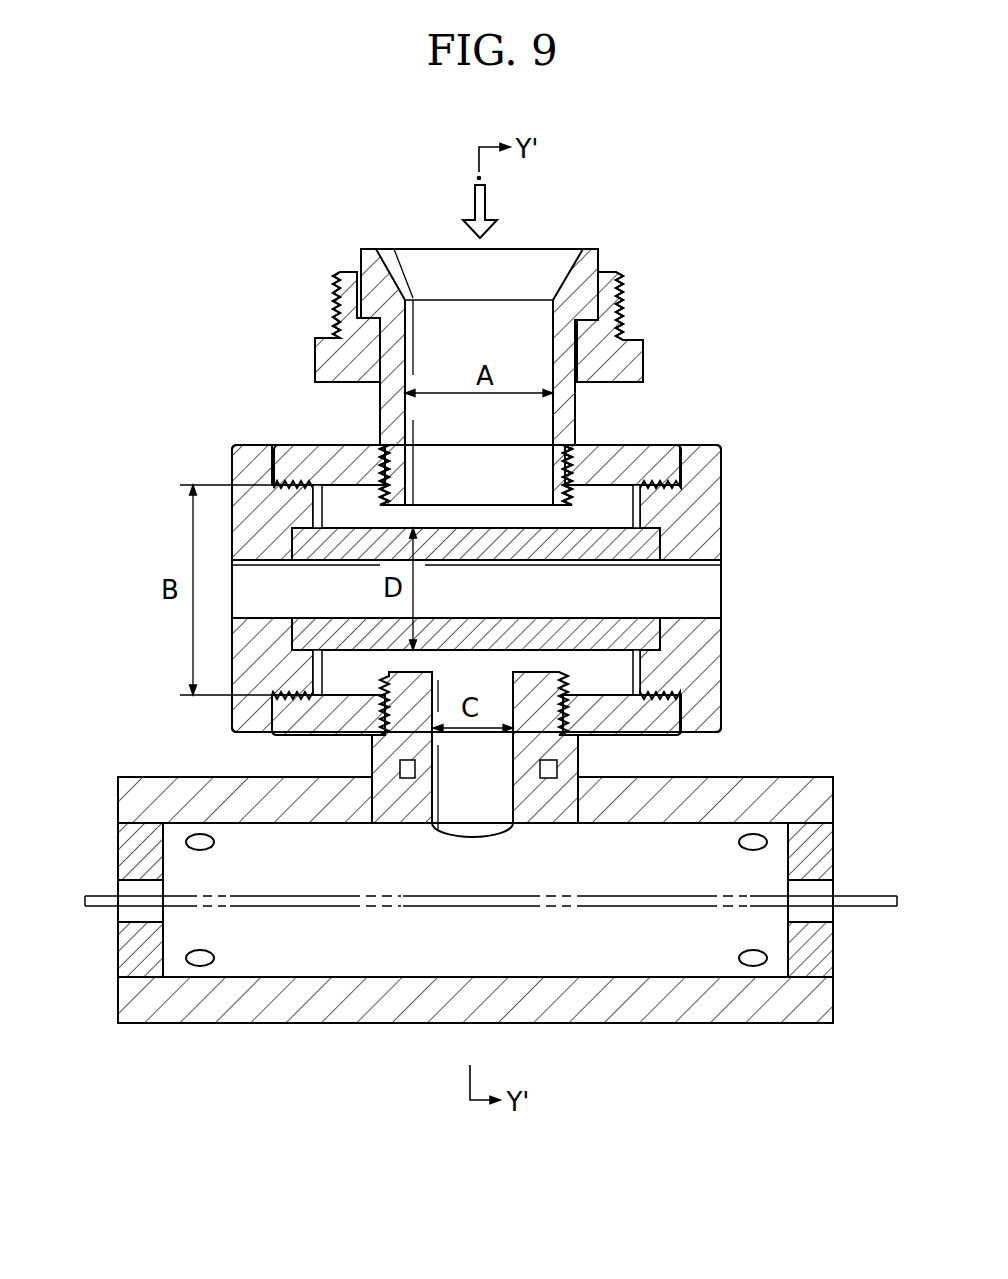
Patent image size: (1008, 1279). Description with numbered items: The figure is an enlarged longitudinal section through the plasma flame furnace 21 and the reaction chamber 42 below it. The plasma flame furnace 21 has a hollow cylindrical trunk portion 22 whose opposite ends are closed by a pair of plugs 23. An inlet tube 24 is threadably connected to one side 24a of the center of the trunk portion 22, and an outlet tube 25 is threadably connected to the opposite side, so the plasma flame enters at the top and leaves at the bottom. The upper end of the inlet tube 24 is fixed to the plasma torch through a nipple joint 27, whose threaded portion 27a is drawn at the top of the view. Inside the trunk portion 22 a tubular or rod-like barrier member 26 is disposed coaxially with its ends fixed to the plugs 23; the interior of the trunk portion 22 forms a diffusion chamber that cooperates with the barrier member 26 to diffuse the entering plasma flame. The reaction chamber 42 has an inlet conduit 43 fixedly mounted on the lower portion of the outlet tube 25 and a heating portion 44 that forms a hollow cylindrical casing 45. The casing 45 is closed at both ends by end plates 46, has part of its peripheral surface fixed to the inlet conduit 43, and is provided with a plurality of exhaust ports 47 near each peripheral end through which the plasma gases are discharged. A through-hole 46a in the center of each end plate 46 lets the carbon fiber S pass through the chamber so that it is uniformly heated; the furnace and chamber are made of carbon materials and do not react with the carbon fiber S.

The plasma flame furnace 21 is at (750, 287).
The hollow cylindrical trunk portion 22 is at (306, 445).
The plugs 23 is at (724, 521).
The inlet tube 24 is at (597, 266).
The side of the center of the trunk portion 24a is at (596, 445).
The outlet tube 25 is at (383, 758).
The barrier member 26 is at (566, 553).
The nipple joint 27 is at (645, 352).
The threaded portion of lock nut 27a is at (626, 292).
The reaction chamber 42 is at (787, 750).
The inlet conduit 43 is at (532, 770).
The heating portion 44 is at (402, 1034).
The hollow cylindrical casing 45 is at (622, 1028).
The end plates 46 is at (165, 952).
The through-hole 46a is at (125, 887).
The exhaust ports 47 is at (215, 843).
The carbon fiber S is at (648, 908).